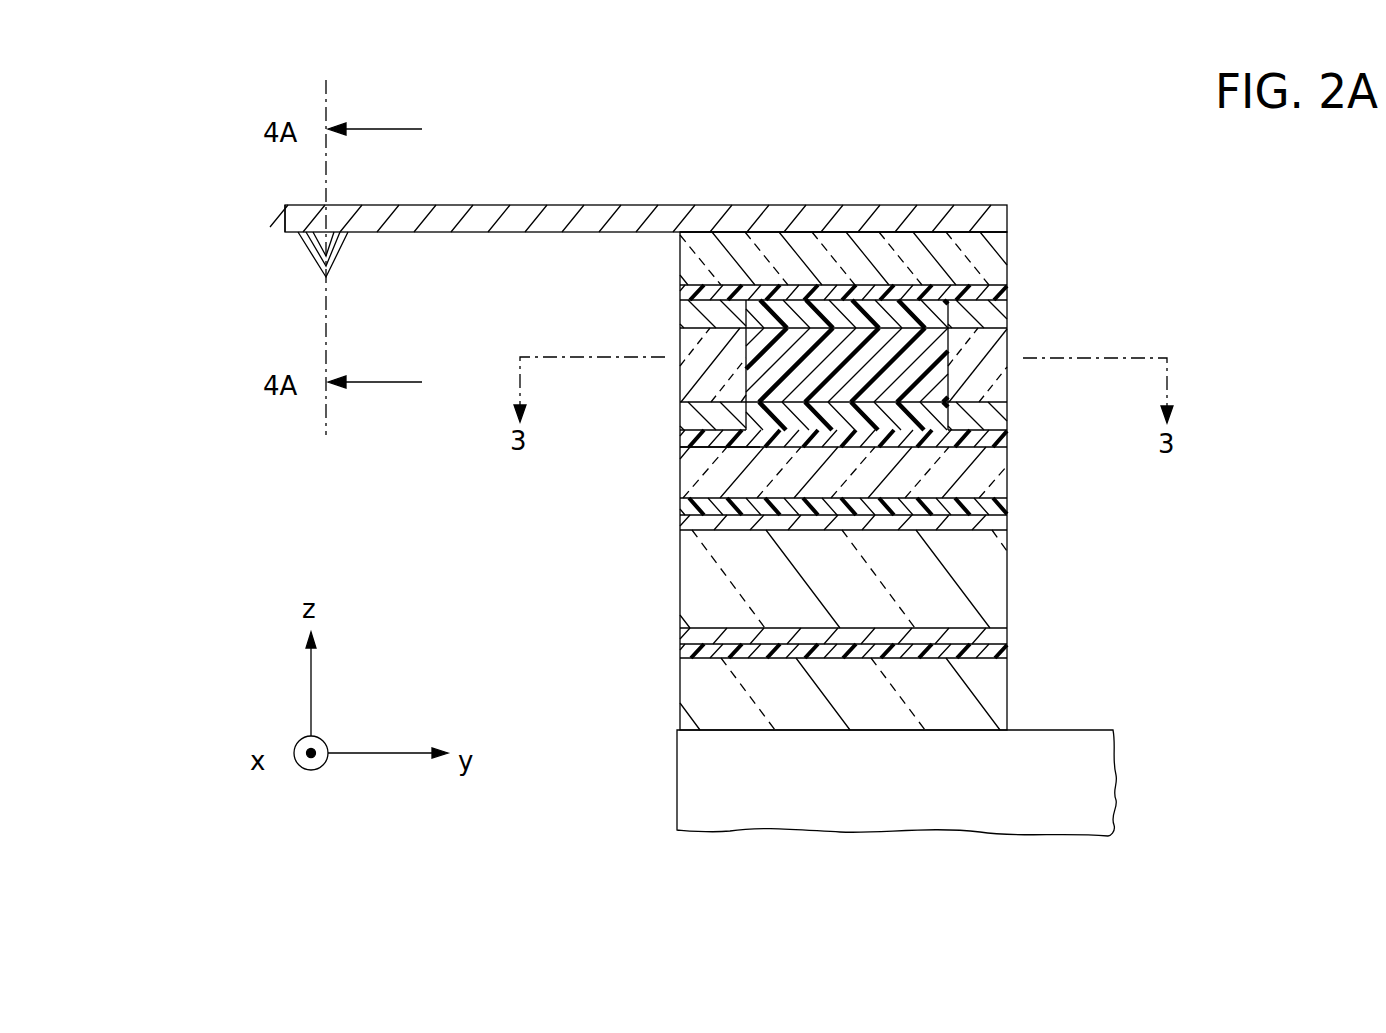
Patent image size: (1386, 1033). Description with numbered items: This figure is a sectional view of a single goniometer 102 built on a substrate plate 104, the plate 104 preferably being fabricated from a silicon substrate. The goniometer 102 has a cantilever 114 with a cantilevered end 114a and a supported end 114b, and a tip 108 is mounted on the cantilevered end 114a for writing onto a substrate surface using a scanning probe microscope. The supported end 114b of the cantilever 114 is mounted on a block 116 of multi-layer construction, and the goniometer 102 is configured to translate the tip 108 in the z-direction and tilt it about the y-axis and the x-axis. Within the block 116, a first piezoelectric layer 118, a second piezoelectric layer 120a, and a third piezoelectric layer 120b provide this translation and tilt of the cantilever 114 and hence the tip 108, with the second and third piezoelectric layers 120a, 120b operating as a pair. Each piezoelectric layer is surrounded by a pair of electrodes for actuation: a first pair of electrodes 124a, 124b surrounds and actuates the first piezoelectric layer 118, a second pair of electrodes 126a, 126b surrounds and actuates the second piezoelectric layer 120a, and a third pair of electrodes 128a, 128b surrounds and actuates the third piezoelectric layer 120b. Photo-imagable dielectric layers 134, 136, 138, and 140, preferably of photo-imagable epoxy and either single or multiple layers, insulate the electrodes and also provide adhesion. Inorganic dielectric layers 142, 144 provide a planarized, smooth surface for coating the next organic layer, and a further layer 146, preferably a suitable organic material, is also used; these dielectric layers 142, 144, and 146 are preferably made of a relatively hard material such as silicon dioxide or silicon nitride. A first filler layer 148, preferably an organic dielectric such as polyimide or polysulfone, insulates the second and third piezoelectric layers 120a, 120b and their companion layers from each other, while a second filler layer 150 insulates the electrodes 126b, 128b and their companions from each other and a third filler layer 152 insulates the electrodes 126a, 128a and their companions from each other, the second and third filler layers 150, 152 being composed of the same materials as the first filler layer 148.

The goniometer 102 is at (858, 122).
The substrate plate 104 is at (840, 817).
The tip 108 is at (310, 253).
The cantilever 114 is at (517, 207).
The cantilevered end 114a is at (318, 223).
The supported end 114b is at (727, 213).
The block 116 is at (623, 595).
The first piezoelectric layer 118 is at (985, 590).
The second piezoelectric layer 120a is at (690, 350).
The third piezoelectric layer 120b is at (998, 353).
The first electrode 124a is at (1000, 637).
The first electrode 124b is at (1000, 523).
The second electrode 126a is at (700, 418).
The second electrode 126b is at (700, 318).
The third electrode 128a is at (997, 408).
The third electrode 128b is at (995, 317).
The photo-imagable dielectric layer 134 is at (680, 653).
The photo-imagable dielectric layer 136 is at (693, 507).
The photo-imagable dielectric layer 138 is at (1007, 445).
The photo-imagable dielectric layer 140 is at (997, 293).
The inorganic dielectric layer 142 is at (985, 702).
The inorganic dielectric layer 144 is at (970, 475).
The dielectric layer 146 is at (998, 247).
The first filler layer 148 is at (765, 366).
The second filler layer 150 is at (735, 448).
The third filler layer 152 is at (868, 307).